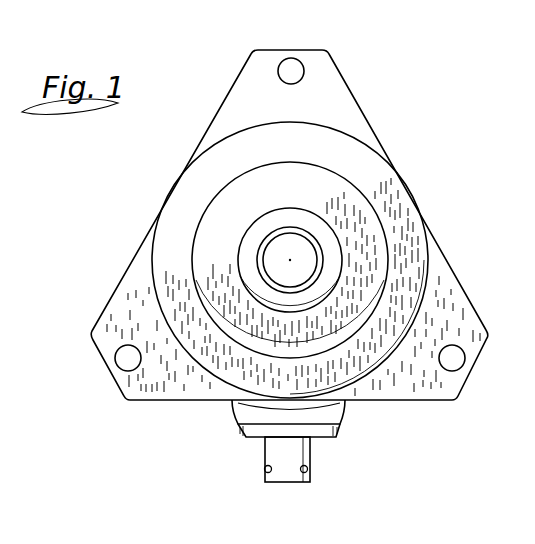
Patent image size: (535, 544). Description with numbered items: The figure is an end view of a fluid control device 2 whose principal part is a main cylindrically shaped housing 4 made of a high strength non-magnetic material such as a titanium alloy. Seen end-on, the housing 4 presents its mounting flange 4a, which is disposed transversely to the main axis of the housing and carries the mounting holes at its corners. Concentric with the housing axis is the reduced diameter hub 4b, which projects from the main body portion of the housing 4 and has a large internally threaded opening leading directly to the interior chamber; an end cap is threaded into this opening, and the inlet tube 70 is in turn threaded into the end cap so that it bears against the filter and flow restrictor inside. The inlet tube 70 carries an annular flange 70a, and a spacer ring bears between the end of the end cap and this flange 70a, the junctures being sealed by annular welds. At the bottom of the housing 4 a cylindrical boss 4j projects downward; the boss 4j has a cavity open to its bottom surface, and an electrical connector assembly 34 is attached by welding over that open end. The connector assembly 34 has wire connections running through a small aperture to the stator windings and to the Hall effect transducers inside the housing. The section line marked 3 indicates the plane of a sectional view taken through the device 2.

The fluid control device 2 is at (389, 95).
The section line 3- 3 is at (250, 12).
The housing 4 is at (408, 193).
The mounting flange 4a is at (333, 62).
The hub 4b is at (207, 203).
The boss 4j is at (346, 414).
The electrical connector assembly 34 is at (305, 452).
The inlet tube 70 is at (321, 245).
The annular flange 70a is at (242, 242).